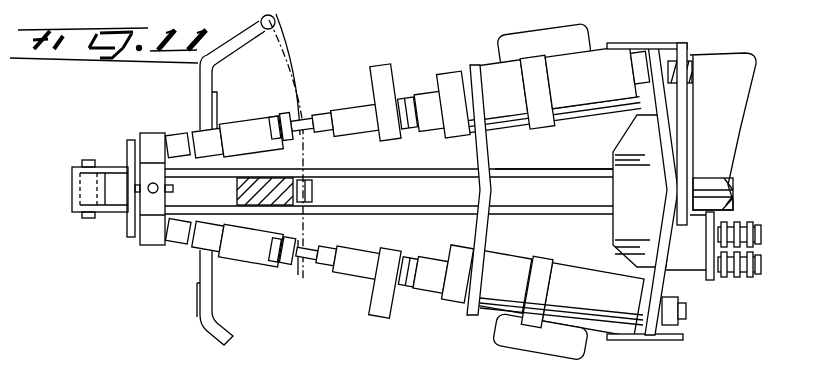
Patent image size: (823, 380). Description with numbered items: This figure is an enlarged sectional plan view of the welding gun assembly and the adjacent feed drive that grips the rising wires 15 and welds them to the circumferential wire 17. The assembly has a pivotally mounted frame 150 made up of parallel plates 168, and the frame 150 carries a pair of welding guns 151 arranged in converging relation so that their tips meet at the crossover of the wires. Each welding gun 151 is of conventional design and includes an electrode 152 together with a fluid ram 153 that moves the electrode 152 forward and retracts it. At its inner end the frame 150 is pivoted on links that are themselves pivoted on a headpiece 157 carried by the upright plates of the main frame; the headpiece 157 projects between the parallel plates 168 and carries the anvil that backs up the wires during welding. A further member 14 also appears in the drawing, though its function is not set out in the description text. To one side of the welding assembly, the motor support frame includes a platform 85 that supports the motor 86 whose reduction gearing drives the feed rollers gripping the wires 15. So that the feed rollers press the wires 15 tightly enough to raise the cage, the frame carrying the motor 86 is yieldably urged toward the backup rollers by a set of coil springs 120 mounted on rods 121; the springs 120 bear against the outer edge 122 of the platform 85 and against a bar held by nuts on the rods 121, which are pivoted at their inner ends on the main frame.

The clamping plate 14 is at (377, 66).
The wires 15 is at (299, 117).
The circumferential wire 17 is at (307, 274).
The platform 85 is at (692, 260).
The motor 86 is at (727, 133).
The coil springs 120 is at (749, 222).
The rods 121 is at (761, 236).
The outer edge 122 is at (714, 278).
The frame 150 is at (546, 170).
The welding guns 151 is at (445, 73).
The electrode 152 is at (329, 110).
The fluid ram 153 is at (593, 89).
The headpiece 157 is at (290, 180).
The parallel plates 168 is at (421, 175).